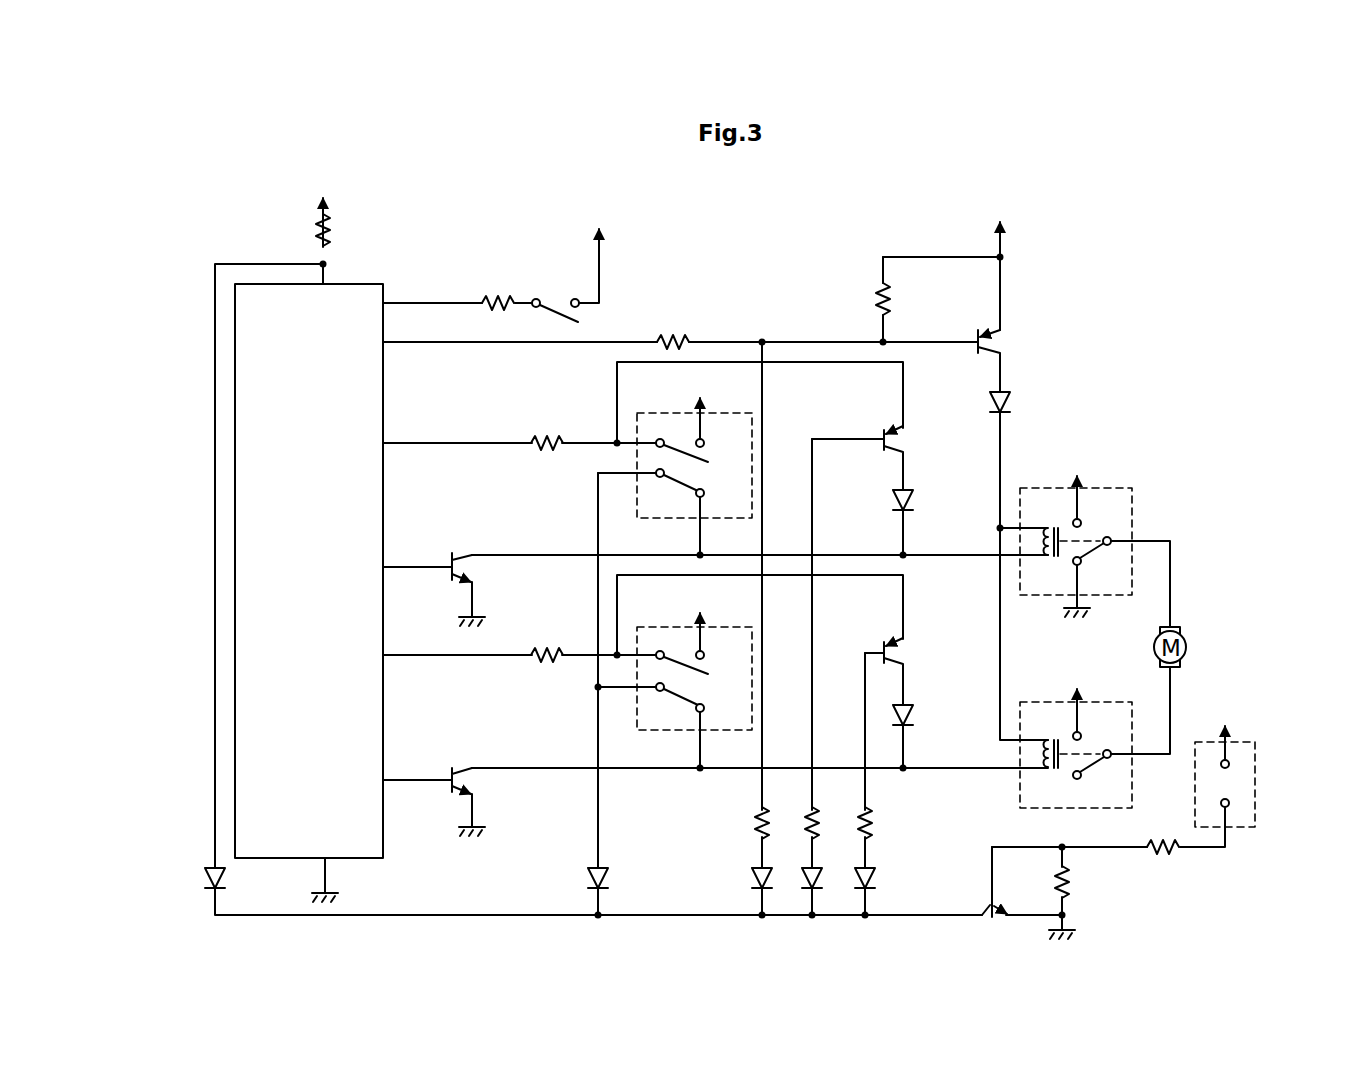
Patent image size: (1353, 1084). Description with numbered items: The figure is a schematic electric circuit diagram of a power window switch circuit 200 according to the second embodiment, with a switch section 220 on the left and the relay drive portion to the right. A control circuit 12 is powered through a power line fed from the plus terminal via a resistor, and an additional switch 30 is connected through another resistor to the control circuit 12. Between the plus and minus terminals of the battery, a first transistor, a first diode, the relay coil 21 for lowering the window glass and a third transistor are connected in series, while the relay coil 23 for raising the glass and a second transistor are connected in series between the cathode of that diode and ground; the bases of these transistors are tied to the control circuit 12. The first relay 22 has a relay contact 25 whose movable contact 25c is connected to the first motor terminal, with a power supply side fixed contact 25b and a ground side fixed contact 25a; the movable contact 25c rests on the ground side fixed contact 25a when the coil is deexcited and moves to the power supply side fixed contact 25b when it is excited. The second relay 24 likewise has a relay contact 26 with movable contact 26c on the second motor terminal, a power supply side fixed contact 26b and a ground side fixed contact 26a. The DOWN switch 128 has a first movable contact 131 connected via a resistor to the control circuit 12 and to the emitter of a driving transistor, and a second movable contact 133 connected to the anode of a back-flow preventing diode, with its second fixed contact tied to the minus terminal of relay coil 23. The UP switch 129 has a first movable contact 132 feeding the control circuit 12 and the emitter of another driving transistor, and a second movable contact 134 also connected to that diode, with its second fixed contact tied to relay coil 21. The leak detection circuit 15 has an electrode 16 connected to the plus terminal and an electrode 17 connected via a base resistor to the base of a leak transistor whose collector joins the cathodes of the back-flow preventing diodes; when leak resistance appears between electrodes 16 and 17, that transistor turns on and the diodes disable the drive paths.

The control circuit 12 is at (352, 283).
The leak detection circuit 15 is at (1238, 763).
The electrode 16 is at (1221, 764).
The electrode 17 is at (1221, 803).
The relay coil 21 is at (1039, 737).
The first relay 22 is at (1020, 702).
The relay coil 23 is at (1039, 524).
The second relay 24 is at (1133, 527).
The relay contact 25 is at (1090, 737).
The ground side fixed contact 25a is at (1072, 780).
The power supply side fixed contact 25b is at (1082, 730).
The movable contact 25c is at (1096, 769).
The relay contact 26 is at (1098, 536).
The ground side fixed contact 26a is at (1070, 575).
The power supply side fixed contact 26b is at (1082, 518).
The movable contact 26c is at (1096, 556).
The switch 30 is at (560, 296).
The DOWN switch 128 is at (792, 458).
The UP switch 129 is at (792, 671).
The first movable contact 131 is at (697, 441).
The first movable contact 132 is at (697, 653).
The second movable contact 133 is at (687, 495).
The second movable contact 134 is at (687, 710).
The power window switch circuit 200 is at (1158, 402).
The switch circuit 220 is at (722, 283).